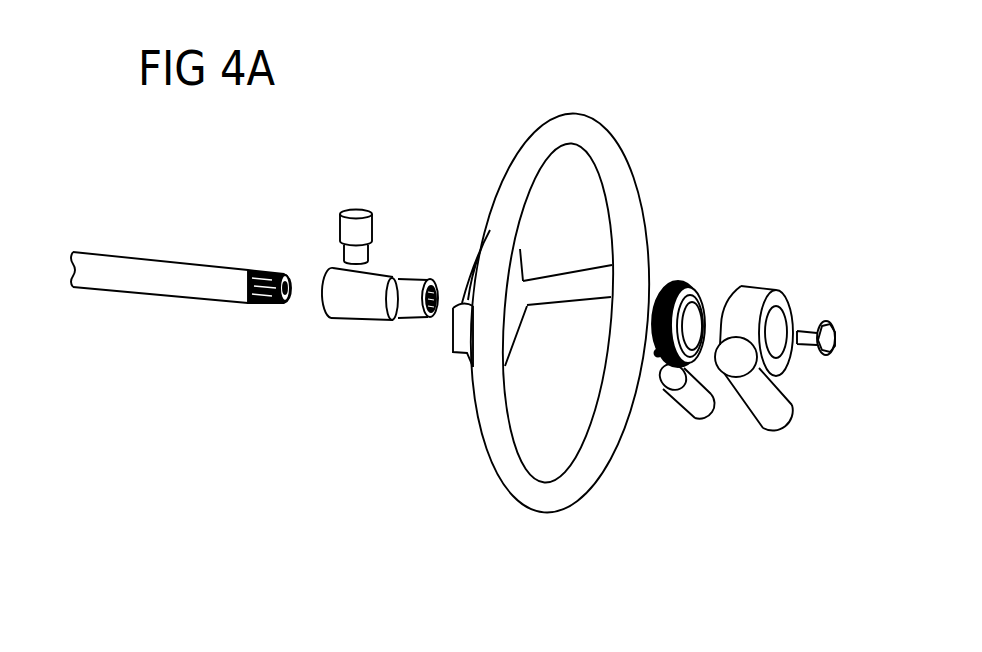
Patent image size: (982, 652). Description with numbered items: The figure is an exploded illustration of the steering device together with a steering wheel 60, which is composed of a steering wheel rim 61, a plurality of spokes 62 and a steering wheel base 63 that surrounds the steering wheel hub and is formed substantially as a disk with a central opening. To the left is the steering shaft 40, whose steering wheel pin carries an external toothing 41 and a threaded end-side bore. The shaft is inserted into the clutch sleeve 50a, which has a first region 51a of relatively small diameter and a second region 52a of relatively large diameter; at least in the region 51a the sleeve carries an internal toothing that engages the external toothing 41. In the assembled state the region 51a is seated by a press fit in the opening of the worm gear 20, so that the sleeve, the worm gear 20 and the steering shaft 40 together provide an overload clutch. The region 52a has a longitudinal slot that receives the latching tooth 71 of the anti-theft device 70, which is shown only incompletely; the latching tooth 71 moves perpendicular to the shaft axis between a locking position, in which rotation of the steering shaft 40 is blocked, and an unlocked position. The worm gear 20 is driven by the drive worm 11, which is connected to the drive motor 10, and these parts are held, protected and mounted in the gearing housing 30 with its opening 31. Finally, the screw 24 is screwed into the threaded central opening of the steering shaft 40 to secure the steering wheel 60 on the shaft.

The drive motor 10 is at (680, 420).
The drive worm 11 is at (656, 358).
The worm gear 20 is at (690, 290).
The screw 24 is at (833, 354).
The gearing housing 30 is at (769, 321).
The opening 31 is at (776, 325).
The steering shaft 40 is at (180, 294).
The external toothing 41 is at (265, 305).
The clutch sleeve 50a is at (362, 328).
The first region of relatively small diameter 51a is at (408, 323).
The second region of relatively large diameter 52a is at (340, 320).
The steering wheel 60 is at (558, 266).
The steering wheel rim 61 is at (612, 128).
The spokes 62 is at (572, 292).
The steering wheel base 63 is at (515, 340).
The anti-theft device 70 is at (374, 222).
The latching tooth 71 is at (369, 253).